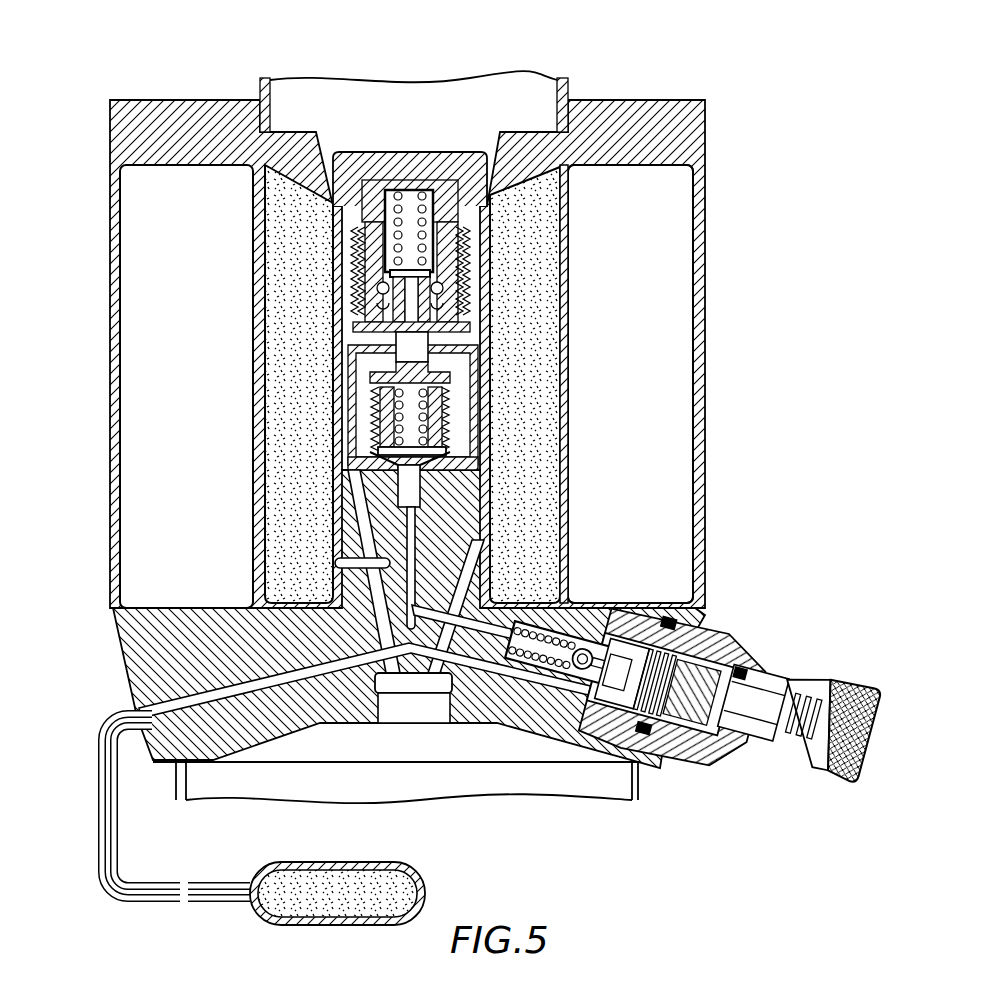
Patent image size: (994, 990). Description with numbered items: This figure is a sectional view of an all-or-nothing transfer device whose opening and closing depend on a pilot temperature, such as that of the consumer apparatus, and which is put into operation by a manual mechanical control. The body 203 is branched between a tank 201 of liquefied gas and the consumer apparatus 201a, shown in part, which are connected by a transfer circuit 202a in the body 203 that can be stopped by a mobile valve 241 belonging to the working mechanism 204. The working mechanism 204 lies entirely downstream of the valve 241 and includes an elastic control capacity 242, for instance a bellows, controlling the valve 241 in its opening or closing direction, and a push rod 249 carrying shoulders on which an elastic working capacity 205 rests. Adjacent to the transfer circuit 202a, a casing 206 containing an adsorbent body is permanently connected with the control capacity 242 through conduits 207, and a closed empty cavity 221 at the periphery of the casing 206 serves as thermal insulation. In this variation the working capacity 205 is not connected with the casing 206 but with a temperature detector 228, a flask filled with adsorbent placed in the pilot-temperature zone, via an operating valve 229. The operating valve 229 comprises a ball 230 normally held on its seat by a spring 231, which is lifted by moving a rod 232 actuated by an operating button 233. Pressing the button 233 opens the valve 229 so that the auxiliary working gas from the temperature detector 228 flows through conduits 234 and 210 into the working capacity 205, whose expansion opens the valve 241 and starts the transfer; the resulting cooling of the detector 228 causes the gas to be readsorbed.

The tank 201 is at (272, 100).
The consumer apparatus 201a is at (250, 780).
The transfer circuit 202a is at (363, 597).
The body 203 is at (118, 372).
The working mechanism 204 is at (475, 353).
The elastic working capacity 205 is at (372, 412).
The casing 206 is at (368, 490).
The conduits 207 is at (372, 488).
The conduit 210 is at (413, 527).
The closed and empty cavity 221 is at (645, 376).
The temperature detector 228 is at (420, 848).
The operating valve 229 is at (687, 672).
The ball 230 is at (583, 665).
The spring 231 is at (530, 653).
The rod 232 is at (607, 630).
The operating button 233 is at (838, 687).
The conduits 234 is at (203, 707).
The mobile valve 241 is at (563, 197).
The elastic control capacity 242 is at (353, 267).
The push rod 249 is at (446, 353).